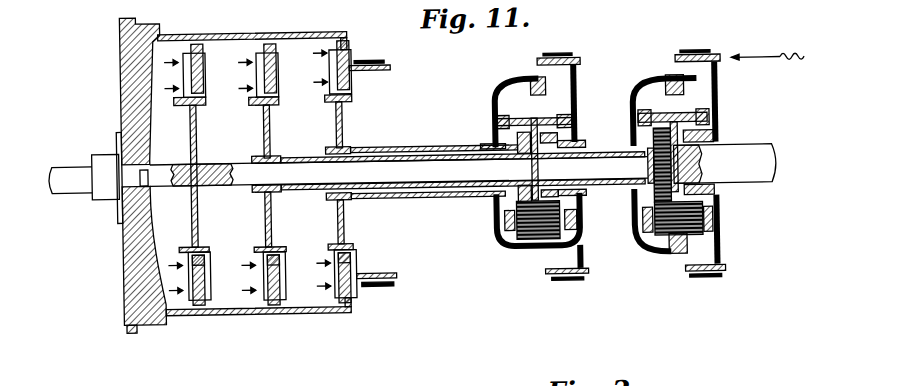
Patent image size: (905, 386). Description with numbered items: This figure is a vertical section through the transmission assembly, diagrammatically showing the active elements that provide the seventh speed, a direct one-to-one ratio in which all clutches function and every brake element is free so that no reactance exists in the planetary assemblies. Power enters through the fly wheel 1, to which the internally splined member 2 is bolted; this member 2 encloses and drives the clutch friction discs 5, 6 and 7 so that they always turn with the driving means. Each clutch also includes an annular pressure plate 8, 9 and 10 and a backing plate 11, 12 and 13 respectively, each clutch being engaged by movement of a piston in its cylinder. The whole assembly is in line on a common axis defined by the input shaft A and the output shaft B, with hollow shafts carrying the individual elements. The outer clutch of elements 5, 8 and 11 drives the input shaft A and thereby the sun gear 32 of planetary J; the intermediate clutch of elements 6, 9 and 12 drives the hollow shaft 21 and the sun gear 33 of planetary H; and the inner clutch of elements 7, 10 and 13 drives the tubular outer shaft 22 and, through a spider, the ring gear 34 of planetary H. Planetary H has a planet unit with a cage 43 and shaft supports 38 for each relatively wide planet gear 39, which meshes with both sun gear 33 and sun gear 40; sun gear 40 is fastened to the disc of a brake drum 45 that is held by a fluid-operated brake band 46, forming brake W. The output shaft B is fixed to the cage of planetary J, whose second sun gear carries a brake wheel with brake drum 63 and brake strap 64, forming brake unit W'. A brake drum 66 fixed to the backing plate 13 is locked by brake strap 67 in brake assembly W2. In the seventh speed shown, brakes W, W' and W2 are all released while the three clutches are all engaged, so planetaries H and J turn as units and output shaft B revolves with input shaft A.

The fly wheel 1 is at (122, 284).
The internally splined member 2 is at (232, 313).
The clutch friction disc 5 is at (198, 311).
The clutch friction disc 6 is at (276, 314).
The clutch friction disc 7 is at (353, 312).
The annular pressure plate 8 is at (181, 310).
The annular pressure plate 9 is at (259, 310).
The annular pressure plate 10 is at (326, 310).
The backing plate 11 is at (204, 255).
The backing plate 12 is at (287, 246).
The backing plate 13 is at (354, 252).
The hollow shaft 21 is at (294, 156).
The hollow shaft 22 is at (397, 145).
The sun gear 32 is at (650, 135).
The sun gear 33 is at (492, 138).
The ring gear 34 is at (539, 246).
The shaft support 38 is at (501, 242).
The planet gear 39 is at (541, 241).
The sun gear 40 is at (553, 123).
The cage 43 is at (516, 114).
The brake drum 45 is at (587, 276).
The brake band 46 is at (570, 57).
The brake drum 63 is at (724, 270).
The brake strap 64 is at (712, 57).
The brake drum 66 is at (389, 71).
The brake strap 67 is at (389, 61).
The input shaft A is at (164, 190).
The output shaft B is at (748, 183).
The planetary H is at (486, 228).
The planetary J is at (636, 226).
The brake W is at (540, 315).
The brake unit W' is at (680, 308).
The brake assembly W2 is at (378, 288).